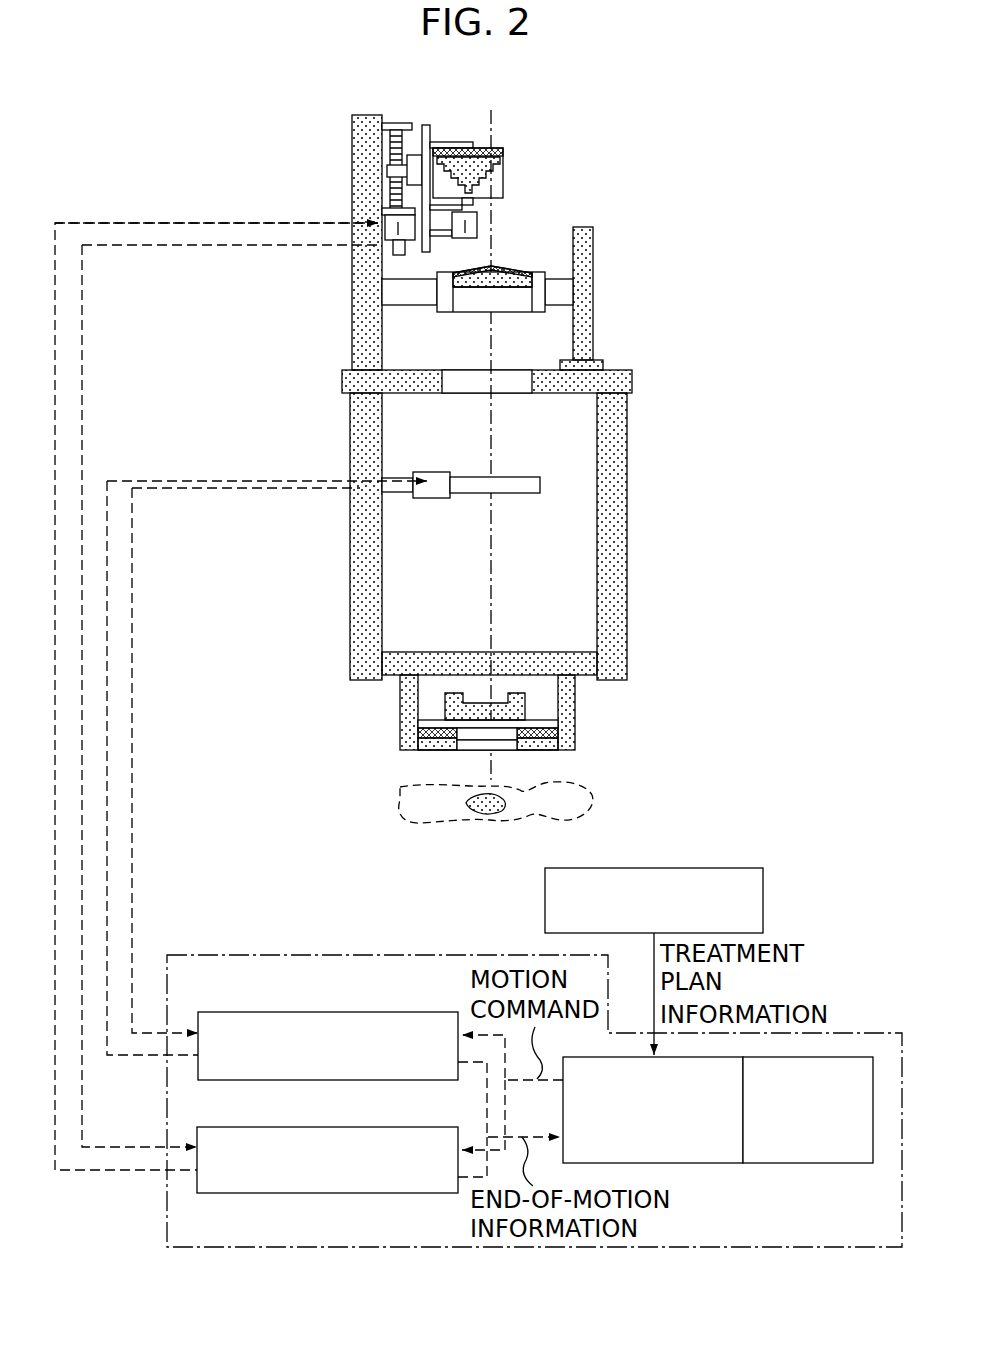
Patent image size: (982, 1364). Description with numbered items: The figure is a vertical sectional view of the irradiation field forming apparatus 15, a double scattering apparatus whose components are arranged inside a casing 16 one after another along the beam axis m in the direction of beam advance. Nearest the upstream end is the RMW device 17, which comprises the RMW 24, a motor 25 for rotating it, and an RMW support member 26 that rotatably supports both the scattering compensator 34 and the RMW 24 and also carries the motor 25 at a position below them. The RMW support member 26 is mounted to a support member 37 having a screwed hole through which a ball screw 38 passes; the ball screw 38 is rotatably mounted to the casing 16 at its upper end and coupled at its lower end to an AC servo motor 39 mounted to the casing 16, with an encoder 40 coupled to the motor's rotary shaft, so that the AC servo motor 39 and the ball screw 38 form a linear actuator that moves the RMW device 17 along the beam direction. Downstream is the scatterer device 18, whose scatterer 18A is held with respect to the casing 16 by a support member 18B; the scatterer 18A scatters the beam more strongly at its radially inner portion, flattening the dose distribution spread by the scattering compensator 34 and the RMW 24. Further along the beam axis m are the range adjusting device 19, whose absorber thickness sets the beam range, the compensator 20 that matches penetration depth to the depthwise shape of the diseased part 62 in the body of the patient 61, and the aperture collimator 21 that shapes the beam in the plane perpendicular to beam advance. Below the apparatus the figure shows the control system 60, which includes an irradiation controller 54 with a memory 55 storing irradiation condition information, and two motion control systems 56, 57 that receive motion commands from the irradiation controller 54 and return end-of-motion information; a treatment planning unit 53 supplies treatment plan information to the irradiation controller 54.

The irradiation field forming apparatus 15 is at (630, 140).
The casing 16 is at (362, 115).
The range modulation wheel (RMW) device 17 is at (515, 158).
The scatterer device 18 is at (492, 287).
The scatterer 18A is at (520, 289).
The support member 18B is at (418, 294).
The range adjusting device 19 is at (537, 467).
The compensator (bolus) 20 is at (525, 706).
The aperture collimator 21 is at (576, 731).
The RMW 24 is at (504, 196).
The motor 25 is at (478, 226).
The RMW support member 26 is at (431, 126).
The scattering compensator 34 is at (504, 150).
The support member 37 is at (389, 172).
The ball screw 38 is at (393, 146).
The AC servo motor 39 is at (386, 216).
The encoder 40 is at (395, 256).
The treatment planning unit 53 is at (763, 893).
The irradiation controller 54 is at (715, 1163).
The memory 55 is at (825, 1163).
The motion control system 56 is at (238, 1012).
The motion control system 57 is at (383, 1194).
The control system 60 is at (890, 1031).
The patient 61 is at (600, 800).
The diseased part 62 is at (497, 800).
The beam axis m is at (505, 116).